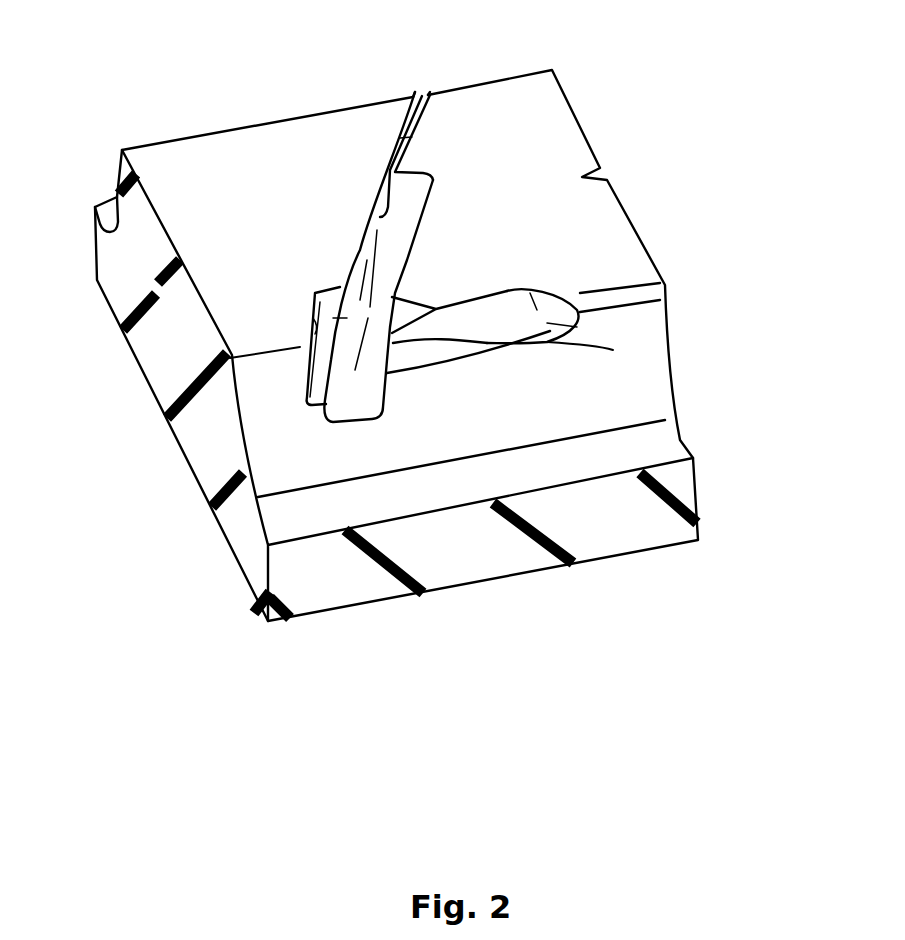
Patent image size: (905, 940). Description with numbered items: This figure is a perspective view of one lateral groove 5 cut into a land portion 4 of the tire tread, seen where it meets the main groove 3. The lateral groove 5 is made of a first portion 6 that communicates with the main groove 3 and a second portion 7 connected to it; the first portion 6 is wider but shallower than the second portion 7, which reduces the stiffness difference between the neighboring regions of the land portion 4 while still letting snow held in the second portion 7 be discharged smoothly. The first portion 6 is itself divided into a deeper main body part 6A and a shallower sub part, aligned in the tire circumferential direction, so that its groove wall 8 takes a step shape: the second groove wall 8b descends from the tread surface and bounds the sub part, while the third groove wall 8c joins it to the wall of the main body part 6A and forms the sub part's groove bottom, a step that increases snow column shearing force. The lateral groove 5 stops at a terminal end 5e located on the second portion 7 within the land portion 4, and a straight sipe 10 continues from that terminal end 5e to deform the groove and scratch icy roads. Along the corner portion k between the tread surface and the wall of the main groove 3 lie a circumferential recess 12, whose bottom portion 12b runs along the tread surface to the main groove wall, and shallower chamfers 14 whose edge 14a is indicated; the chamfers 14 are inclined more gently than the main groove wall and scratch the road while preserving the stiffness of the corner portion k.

The main groove 3 is at (343, 86).
The land portion 4 is at (304, 158).
The lateral groove 5 is at (433, 177).
The terminal end 5e is at (413, 170).
The first portion 6 is at (327, 300).
The main body part 6A is at (369, 411).
The second portion 7 is at (407, 260).
The groove wall 8 is at (313, 387).
The second groove wall 8b is at (313, 312).
The third groove wall 8c is at (305, 380).
The sipe 10 is at (447, 122).
The circumferential recess 12 is at (493, 313).
The bottom portion 12b is at (613, 350).
The chamfer 14 is at (265, 372).
The channel edge 14a is at (627, 297).
The corner portion k is at (654, 320).